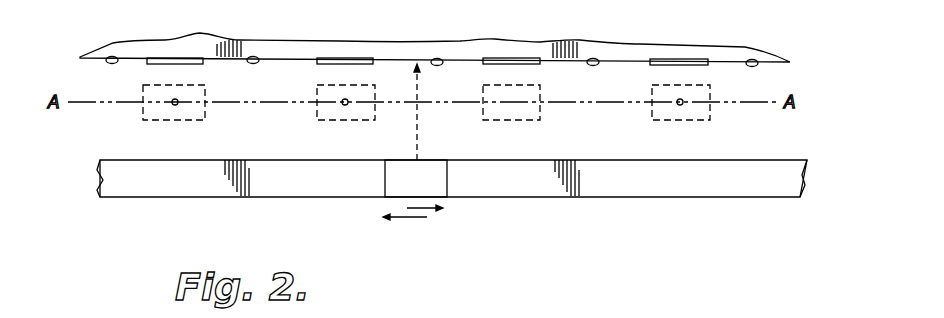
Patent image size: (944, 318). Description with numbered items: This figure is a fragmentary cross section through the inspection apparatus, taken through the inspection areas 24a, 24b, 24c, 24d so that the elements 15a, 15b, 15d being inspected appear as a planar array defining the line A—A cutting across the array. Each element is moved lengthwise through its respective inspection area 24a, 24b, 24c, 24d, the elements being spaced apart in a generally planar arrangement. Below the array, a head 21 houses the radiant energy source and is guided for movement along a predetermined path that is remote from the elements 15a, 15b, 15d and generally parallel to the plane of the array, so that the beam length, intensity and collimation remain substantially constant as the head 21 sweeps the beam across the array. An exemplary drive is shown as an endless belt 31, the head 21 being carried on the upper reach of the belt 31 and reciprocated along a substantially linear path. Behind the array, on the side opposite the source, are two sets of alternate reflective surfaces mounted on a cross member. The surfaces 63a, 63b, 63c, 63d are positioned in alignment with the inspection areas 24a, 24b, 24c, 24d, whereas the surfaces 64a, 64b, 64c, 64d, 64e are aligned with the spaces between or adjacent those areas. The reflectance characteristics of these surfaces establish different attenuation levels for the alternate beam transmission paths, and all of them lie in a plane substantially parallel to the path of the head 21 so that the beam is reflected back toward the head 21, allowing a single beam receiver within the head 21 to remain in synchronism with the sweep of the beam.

The surface 64a is at (112, 60).
The surface 64b is at (253, 60).
The surface 64c is at (437, 62).
The surface 64d is at (593, 62).
The surface 64e is at (752, 63).
The surface 63a is at (155, 64).
The surface 63b is at (330, 64).
The surface 63c is at (493, 64).
The surface 63d is at (660, 65).
The inspection area 24a is at (153, 125).
The inspection area 24b is at (333, 125).
The inspection area 24c is at (514, 125).
The inspection area 24d is at (676, 125).
The element 15a is at (178, 103).
The element 15b is at (348, 103).
The element 15d is at (683, 104).
The endless belt 31 is at (168, 197).
The head 21 is at (448, 181).